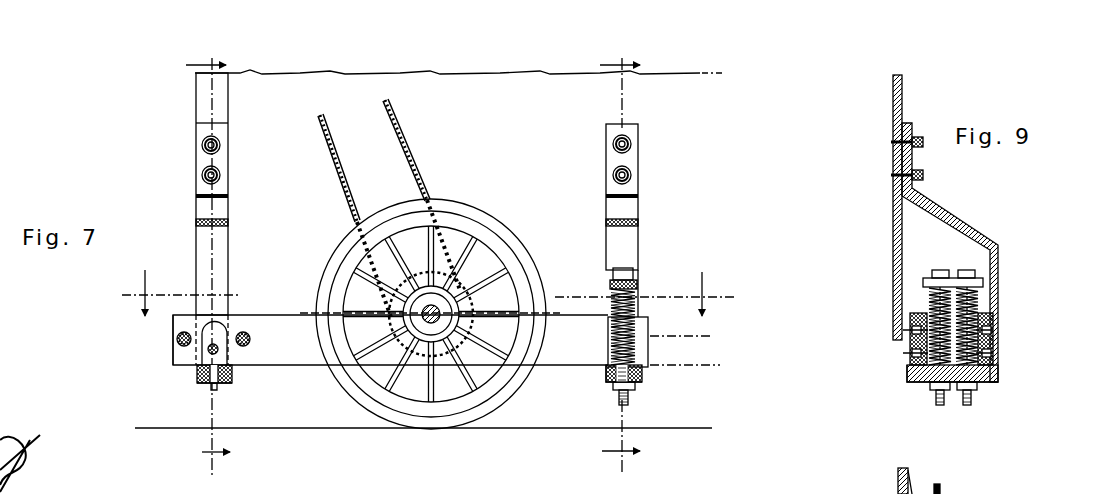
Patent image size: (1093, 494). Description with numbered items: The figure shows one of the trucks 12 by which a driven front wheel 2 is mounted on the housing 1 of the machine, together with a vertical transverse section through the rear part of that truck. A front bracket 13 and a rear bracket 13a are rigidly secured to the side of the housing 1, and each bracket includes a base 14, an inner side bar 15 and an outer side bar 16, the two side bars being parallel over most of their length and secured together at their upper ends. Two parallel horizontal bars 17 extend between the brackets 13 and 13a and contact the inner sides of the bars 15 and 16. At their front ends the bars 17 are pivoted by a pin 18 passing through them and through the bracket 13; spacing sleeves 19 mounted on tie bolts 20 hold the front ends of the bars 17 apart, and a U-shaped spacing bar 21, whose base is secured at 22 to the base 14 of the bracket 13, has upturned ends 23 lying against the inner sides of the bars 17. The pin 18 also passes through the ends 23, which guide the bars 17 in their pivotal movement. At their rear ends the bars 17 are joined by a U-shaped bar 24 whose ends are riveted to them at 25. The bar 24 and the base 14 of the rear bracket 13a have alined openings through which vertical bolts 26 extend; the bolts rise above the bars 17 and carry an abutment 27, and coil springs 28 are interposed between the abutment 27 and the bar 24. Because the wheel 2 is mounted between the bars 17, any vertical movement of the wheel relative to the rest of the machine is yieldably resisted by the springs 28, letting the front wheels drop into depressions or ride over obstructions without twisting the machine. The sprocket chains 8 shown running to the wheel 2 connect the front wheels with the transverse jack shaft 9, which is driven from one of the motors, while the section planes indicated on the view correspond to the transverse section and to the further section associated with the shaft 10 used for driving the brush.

In FIG. 7, the housing 1 is at (455, 80).
In FIG. 7, the front wheel 2 is at (478, 230).
In FIG. 7, the sprocket chain 8 is at (413, 182).
In FIG. 9, the sprocket chain 8 is at (942, 492).
In FIG. 7, the jack shaft 9 is at (620, 262).
In FIG. 7, the shaft 10 is at (208, 261).
In FIG. 7, the truck 12 is at (170, 368).
In FIG. 9, the truck 12 is at (1006, 362).
In FIG. 7, the front bracket 13 is at (228, 252).
In FIG. 7, the rear bracket 13a is at (640, 252).
In FIG. 9, the rear bracket 13a is at (1000, 241).
In FIG. 7, the base 14 is at (206, 385).
In FIG. 9, the base 14 is at (918, 384).
In FIG. 9, the inner side bar 15 is at (893, 218).
In FIG. 7, the outer side bar 16 is at (197, 222).
In FIG. 7, the horizontal bar 17 is at (306, 360).
In FIG. 9, the horizontal bar 17 is at (910, 340).
In FIG. 7, the pin 18 is at (222, 351).
In FIG. 7, the spacing sleeve 19 is at (178, 345).
In FIG. 7, the tie bolt 20 is at (177, 339).
In FIG. 7, the U-shaped spacing bar 21 is at (197, 371).
In FIG. 7, the securing point 22 is at (213, 385).
In FIG. 7, the upturned end 23 is at (213, 323).
In FIG. 7, the U-shaped bar 24 is at (646, 372).
In FIG. 9, the U-shaped bar 24 is at (985, 386).
In FIG. 9, the rivet 25 is at (900, 360).
In FIG. 7, the vertical bolt 26 is at (620, 399).
In FIG. 9, the vertical bolt 26 is at (960, 402).
In FIG. 7, the abutment 27 is at (634, 284).
In FIG. 9, the abutment 27 is at (923, 284).
In FIG. 7, the coil spring 28 is at (612, 341).
In FIG. 9, the coil spring 28 is at (927, 300).